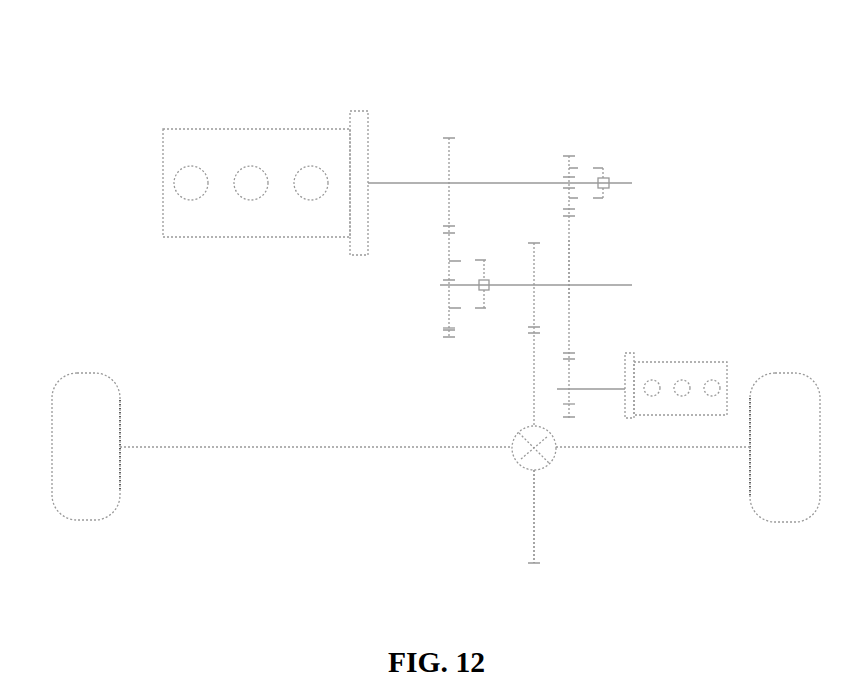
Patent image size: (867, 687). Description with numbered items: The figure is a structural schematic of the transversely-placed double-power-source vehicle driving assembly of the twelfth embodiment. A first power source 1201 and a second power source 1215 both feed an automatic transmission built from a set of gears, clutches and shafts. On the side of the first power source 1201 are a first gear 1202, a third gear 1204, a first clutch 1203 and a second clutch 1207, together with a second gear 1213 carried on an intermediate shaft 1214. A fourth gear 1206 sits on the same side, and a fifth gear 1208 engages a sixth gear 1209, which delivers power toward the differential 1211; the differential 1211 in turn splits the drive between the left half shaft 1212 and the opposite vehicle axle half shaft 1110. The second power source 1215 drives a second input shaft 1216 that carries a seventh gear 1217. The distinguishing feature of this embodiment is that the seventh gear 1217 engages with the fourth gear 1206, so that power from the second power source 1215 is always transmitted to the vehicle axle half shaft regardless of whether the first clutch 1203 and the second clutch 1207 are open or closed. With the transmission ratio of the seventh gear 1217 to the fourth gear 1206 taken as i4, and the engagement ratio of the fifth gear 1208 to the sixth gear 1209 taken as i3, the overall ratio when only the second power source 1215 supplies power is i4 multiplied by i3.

The first power source 1201 is at (286, 140).
The first gear 1202 is at (449, 140).
The first clutch 1203 is at (479, 260).
The third gear 1204 is at (569, 157).
The fourth gear 1206 is at (569, 268).
The second clutch 1207 is at (606, 178).
The fifth gear 1208 is at (534, 305).
The sixth gear 1209 is at (533, 398).
The differential 1211 is at (532, 457).
The left half shaft 1212 is at (395, 447).
The second gear 1213 is at (449, 327).
The intermediate shaft 1214 is at (440, 285).
The second power source 1215 is at (680, 378).
The second input shaft 1216 is at (590, 388).
The seventh gear 1217 is at (569, 404).
The right half shaft 1110 is at (666, 447).